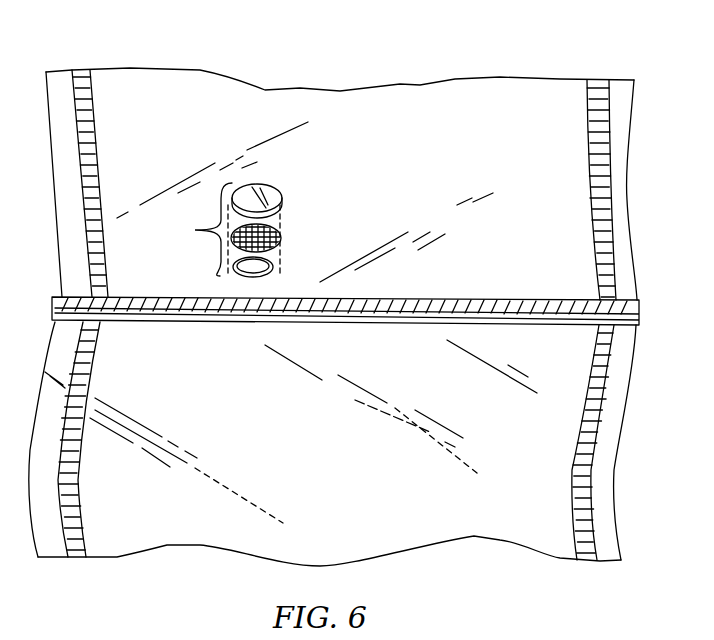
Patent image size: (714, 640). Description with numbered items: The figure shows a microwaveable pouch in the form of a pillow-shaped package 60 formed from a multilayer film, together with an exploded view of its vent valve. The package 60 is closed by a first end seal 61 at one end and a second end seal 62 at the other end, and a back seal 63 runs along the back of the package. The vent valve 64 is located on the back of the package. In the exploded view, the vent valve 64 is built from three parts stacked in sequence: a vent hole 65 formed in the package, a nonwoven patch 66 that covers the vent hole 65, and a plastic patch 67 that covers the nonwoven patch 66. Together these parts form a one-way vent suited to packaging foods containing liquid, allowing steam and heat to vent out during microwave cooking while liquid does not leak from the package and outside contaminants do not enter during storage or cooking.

The pillow-shaped package 60 is at (41, 413).
The first end seal 61 is at (82, 60).
The second end seal 62 is at (603, 68).
The back seal 63 is at (527, 285).
The vent valve 64 is at (253, 210).
The vent hole 65 is at (276, 256).
The nonwoven patch 66 is at (288, 228).
The plastic patch 67 is at (293, 191).